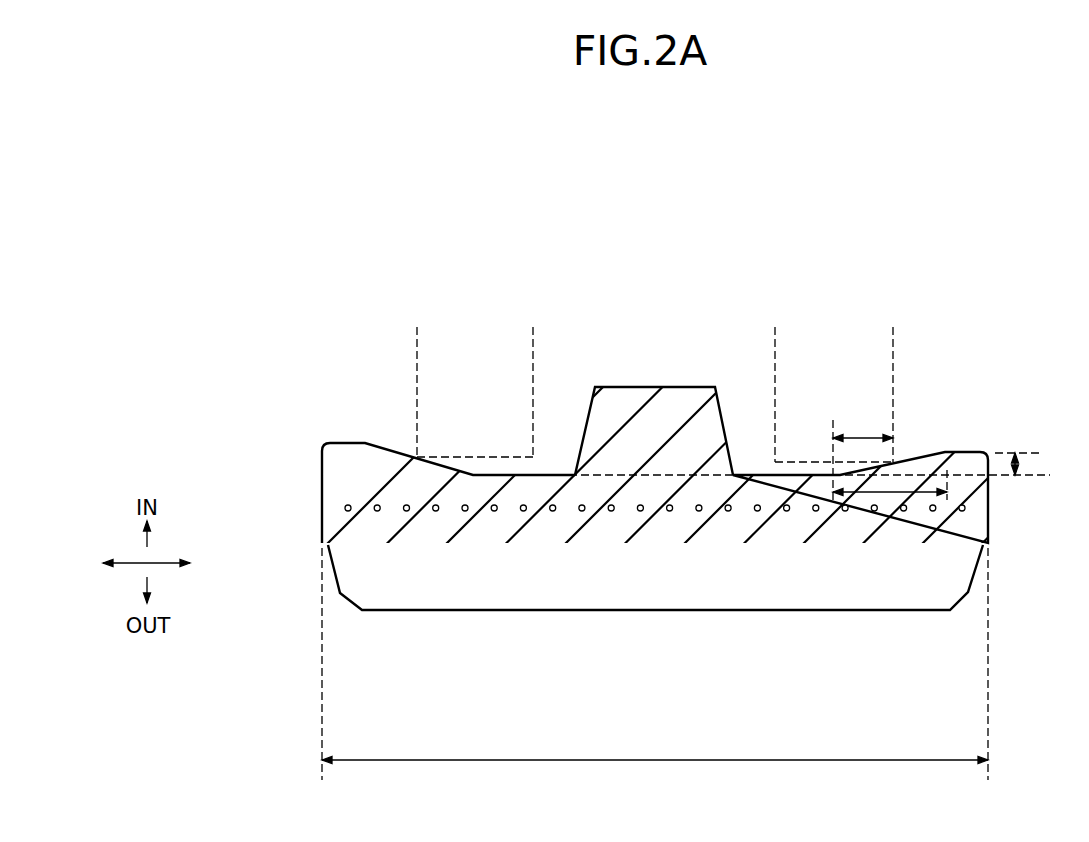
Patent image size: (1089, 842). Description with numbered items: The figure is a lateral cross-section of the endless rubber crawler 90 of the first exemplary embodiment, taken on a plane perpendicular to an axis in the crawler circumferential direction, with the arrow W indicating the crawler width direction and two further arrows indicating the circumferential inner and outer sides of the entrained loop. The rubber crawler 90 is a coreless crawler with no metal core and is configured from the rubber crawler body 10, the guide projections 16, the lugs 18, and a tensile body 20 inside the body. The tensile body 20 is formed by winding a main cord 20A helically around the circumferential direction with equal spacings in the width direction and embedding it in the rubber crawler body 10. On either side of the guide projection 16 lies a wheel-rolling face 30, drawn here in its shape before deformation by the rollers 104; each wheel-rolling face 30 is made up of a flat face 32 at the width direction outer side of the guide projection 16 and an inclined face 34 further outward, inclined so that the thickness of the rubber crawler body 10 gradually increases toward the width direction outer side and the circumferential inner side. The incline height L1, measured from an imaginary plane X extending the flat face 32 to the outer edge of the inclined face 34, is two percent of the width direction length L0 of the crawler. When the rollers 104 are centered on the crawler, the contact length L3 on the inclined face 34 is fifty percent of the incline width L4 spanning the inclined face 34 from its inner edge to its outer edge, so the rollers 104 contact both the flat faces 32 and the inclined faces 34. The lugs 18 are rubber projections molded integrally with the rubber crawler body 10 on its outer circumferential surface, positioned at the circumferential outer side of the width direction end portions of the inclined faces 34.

The rubber crawler body 10 is at (322, 503).
The guide projection 16 is at (672, 387).
The lug 18 is at (425, 612).
The tensile body 20 is at (972, 509).
The main cord 20A is at (945, 513).
The wheel-rolling face 30 is at (428, 377).
The flat face 32 is at (503, 470).
The inclined face 34 is at (452, 468).
The rubber crawler 90 is at (301, 330).
The roller 104 is at (533, 338).
The width direction length L0 is at (655, 671).
The thickness (incline height) L1 is at (1020, 471).
The roller contact length L3 is at (863, 451).
The incline width L4 is at (856, 495).
The imaginary plane X is at (1038, 470).
The crawler width direction arrow W is at (165, 562).